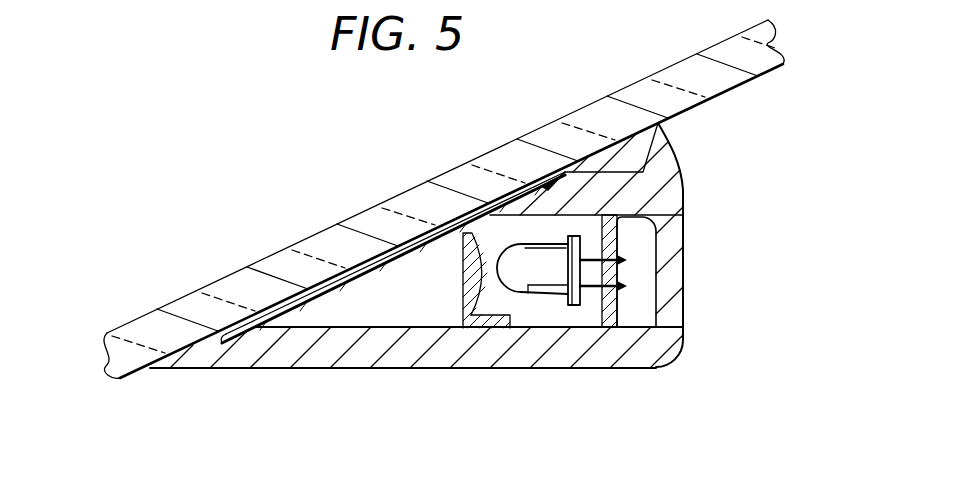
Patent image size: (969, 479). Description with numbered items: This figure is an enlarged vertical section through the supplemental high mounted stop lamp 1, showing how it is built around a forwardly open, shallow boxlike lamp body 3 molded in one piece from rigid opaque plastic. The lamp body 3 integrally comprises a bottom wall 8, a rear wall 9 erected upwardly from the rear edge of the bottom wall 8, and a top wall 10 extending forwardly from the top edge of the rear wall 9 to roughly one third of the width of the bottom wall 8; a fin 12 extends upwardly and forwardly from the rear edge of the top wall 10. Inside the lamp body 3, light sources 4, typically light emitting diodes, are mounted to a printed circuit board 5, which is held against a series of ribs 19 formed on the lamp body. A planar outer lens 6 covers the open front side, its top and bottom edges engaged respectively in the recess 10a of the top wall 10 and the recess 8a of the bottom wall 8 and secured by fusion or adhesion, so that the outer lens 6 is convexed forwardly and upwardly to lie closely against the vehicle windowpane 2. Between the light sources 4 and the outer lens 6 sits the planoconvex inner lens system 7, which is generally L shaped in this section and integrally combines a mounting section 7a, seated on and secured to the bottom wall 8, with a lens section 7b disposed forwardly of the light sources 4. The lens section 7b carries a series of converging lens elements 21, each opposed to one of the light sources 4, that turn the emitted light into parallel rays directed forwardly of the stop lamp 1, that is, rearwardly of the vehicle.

The supplemental high mounted stop lamp 1 is at (612, 384).
The vehicle windowpane 2 is at (640, 78).
The lamp body 3 is at (684, 308).
The light sources 4 is at (530, 293).
The printed circuit board 5 is at (660, 318).
The outer lens 6 is at (370, 260).
The inner lens system 7 is at (440, 237).
The mounting section 7a is at (497, 332).
The lens section 7b is at (462, 280).
The bottom wall 8 is at (357, 355).
The recess 8a is at (222, 340).
The rear wall 9 is at (685, 238).
The top wall 10 is at (597, 158).
The recess 10a is at (535, 182).
The fin 12 is at (668, 148).
The ribs 19 is at (640, 287).
The converging lens elements 21 is at (478, 208).